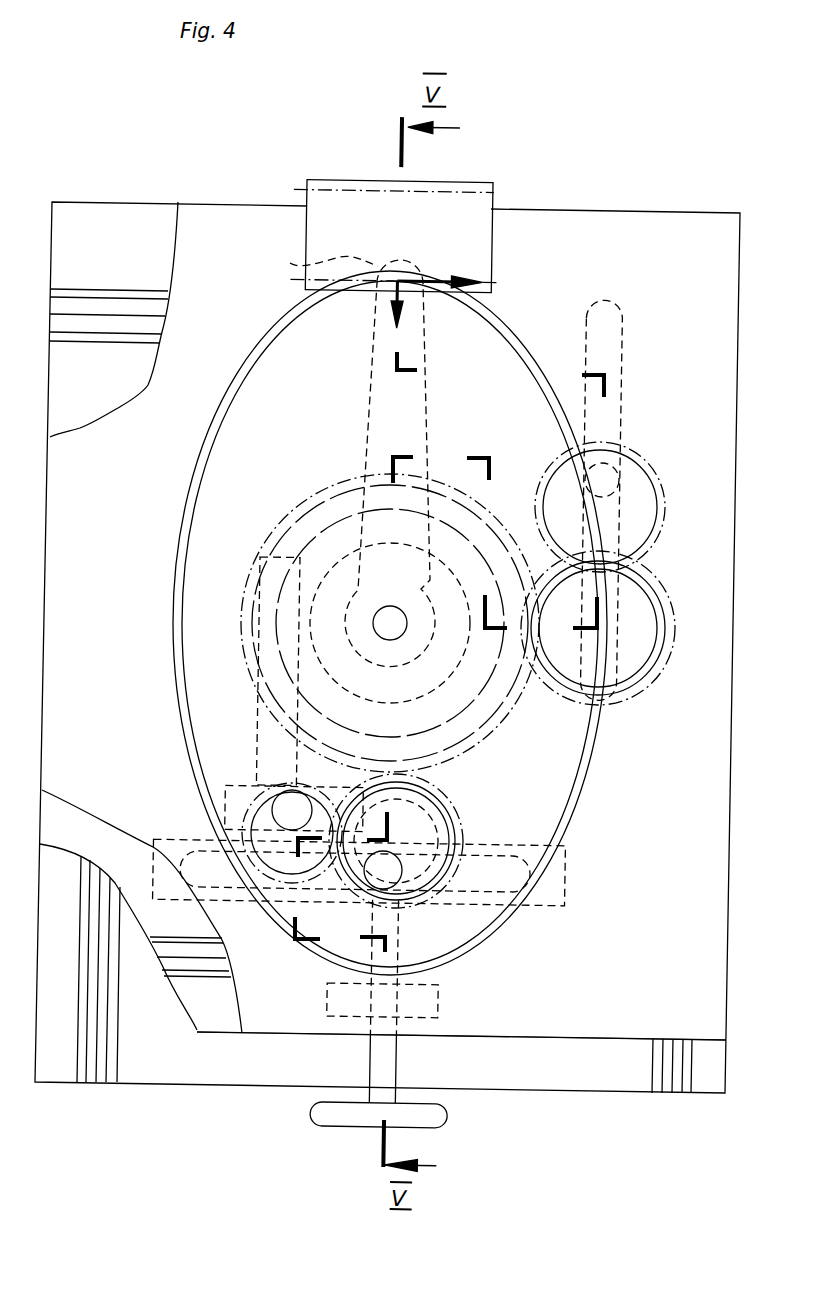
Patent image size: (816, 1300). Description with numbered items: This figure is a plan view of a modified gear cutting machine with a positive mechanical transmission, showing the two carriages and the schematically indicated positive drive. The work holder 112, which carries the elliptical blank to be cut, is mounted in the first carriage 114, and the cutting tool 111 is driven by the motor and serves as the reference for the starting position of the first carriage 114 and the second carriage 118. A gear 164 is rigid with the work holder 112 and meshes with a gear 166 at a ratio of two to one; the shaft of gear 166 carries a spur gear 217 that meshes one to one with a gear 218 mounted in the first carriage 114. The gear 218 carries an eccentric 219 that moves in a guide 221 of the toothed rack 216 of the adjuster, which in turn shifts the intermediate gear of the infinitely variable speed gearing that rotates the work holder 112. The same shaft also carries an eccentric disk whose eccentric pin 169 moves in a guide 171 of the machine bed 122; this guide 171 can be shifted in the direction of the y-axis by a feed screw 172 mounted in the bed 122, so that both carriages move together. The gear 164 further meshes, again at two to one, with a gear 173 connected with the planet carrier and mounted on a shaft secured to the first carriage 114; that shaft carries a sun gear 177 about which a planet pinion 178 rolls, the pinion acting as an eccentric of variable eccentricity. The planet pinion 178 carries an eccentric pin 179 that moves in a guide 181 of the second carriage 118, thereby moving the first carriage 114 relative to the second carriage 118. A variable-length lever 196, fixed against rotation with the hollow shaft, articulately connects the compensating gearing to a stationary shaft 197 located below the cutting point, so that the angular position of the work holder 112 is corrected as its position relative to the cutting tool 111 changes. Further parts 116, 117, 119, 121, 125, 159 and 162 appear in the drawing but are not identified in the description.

The cutting tool 111 is at (485, 210).
The work holder 112 is at (382, 633).
The first carriage 114 is at (105, 762).
The bearing 116 is at (187, 962).
The bearing 117 is at (93, 300).
The second carriage 118 is at (90, 839).
The bearing 119 is at (100, 1076).
The bearing 121 is at (669, 1083).
The machine bed 122 is at (240, 1083).
The slide 125 is at (276, 671).
The hub 159 is at (425, 662).
The main gear 162 is at (390, 584).
The gear 164 is at (515, 738).
The gear 166 is at (453, 814).
The eccentric pin 169 is at (448, 848).
The guide 171 is at (562, 895).
The feed screw 172 is at (390, 1080).
The gear 173 is at (660, 673).
The sun gear 177 is at (663, 588).
The planet pinion 178 is at (665, 496).
The eccentric pin 179 is at (633, 462).
The guide 181 is at (624, 420).
The lever 196 is at (430, 412).
The stationary shaft 197 is at (298, 264).
The toothed rack 216 is at (268, 680).
The spur gear 217 is at (450, 790).
The gear 218 is at (258, 820).
The eccentric 219 is at (262, 812).
The guide 221 is at (240, 787).